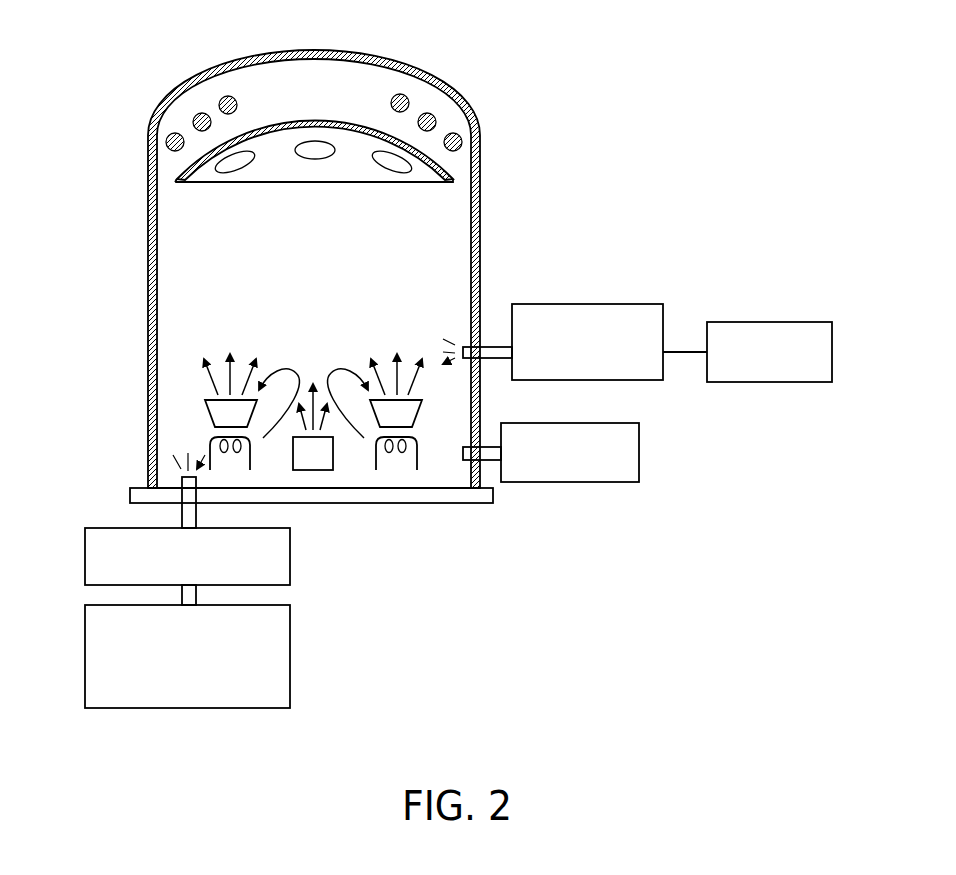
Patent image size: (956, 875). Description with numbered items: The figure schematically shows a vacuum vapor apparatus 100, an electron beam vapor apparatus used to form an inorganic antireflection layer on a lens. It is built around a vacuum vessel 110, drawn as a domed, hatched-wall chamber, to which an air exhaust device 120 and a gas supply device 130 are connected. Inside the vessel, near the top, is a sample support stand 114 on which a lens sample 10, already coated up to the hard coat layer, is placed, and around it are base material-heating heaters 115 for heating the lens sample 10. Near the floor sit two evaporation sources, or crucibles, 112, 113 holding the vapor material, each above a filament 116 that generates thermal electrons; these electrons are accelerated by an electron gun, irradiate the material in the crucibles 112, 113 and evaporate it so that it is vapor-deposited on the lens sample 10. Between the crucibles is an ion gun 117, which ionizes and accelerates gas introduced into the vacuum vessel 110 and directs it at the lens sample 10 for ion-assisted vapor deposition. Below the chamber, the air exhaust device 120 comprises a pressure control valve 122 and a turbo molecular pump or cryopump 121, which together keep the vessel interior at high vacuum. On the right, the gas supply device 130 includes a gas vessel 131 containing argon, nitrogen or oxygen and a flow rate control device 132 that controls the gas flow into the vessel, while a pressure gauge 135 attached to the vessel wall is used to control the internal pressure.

The vacuum vapor apparatus 100 is at (470, 62).
The vacuum vessel 110 is at (481, 153).
The base material-heating heaters 115 is at (199, 114).
The sample support stand 114 is at (314, 159).
The lens sample 10 is at (232, 137).
The evaporation source (crucible) 112 is at (208, 413).
The evaporation source (crucible) 113 is at (420, 418).
The filaments 116 is at (250, 458).
The ion gun 117 is at (333, 458).
The gas supply device 130 is at (637, 275).
The flow rate control device 132 is at (598, 304).
The gas vessel 131 is at (758, 322).
The pressure gauge 135 is at (640, 440).
The air exhaust device 120 is at (306, 580).
The pressure control valve 122 is at (290, 558).
The turbo molecular pump or cryopump 121 is at (290, 633).